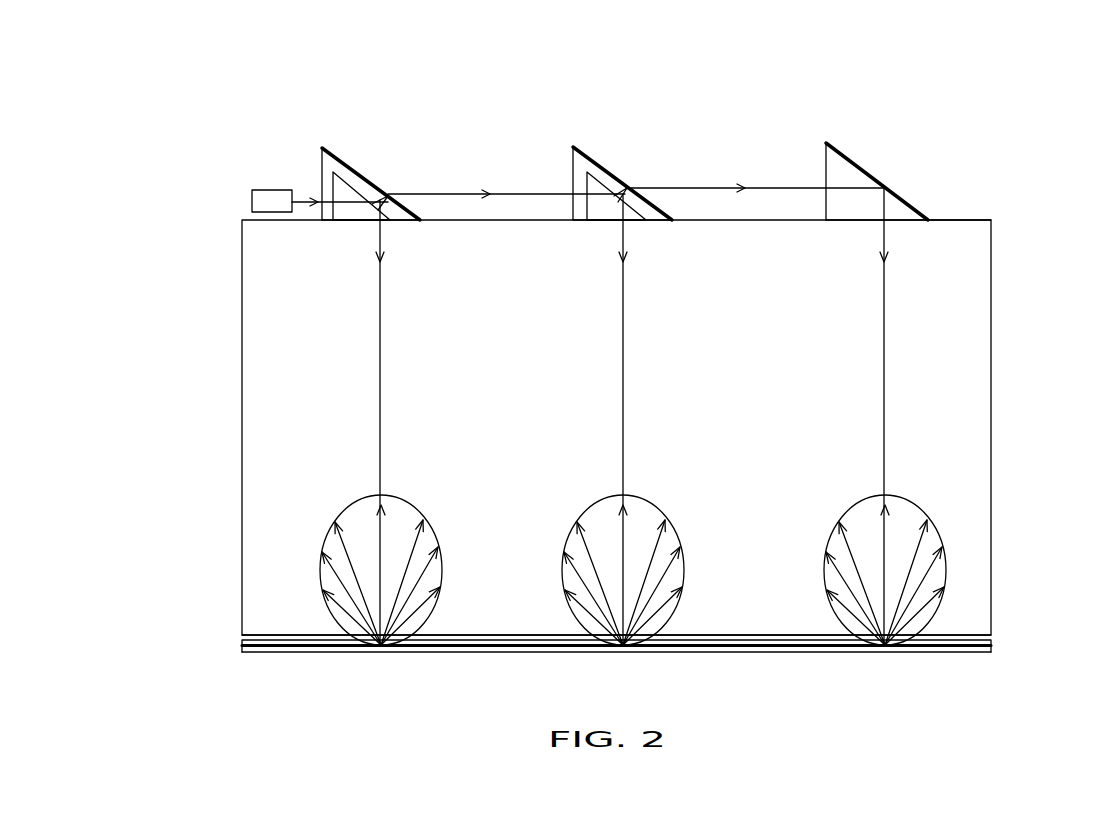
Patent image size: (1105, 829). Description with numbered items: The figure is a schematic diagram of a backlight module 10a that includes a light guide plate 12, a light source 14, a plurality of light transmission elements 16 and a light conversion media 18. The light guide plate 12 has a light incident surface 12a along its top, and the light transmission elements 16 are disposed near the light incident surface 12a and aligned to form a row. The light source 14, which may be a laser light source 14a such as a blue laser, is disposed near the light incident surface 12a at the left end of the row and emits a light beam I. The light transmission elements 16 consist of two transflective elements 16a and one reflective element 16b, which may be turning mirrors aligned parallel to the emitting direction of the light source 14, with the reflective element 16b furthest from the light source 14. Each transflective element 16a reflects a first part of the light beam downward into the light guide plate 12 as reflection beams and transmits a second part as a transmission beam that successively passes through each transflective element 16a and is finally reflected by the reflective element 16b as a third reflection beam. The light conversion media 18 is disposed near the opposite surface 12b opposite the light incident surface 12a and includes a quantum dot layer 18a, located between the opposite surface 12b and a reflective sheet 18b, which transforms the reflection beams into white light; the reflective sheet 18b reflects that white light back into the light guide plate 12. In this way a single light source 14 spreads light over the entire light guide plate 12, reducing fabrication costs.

The backlight module 10a is at (178, 70).
The light guide plate 12 is at (284, 377).
The light incident surface 12a is at (949, 220).
The opposite surface 12b is at (797, 636).
The light source 14 is at (268, 194).
The laser light source 14a is at (272, 201).
The light transmission elements 16 is at (659, 152).
The transflective elements 16a is at (365, 184).
The reflective element 16b is at (857, 178).
The light conversion media 18 is at (673, 630).
The quantum dot layer 18a is at (993, 639).
The reflective sheet 18b is at (993, 649).